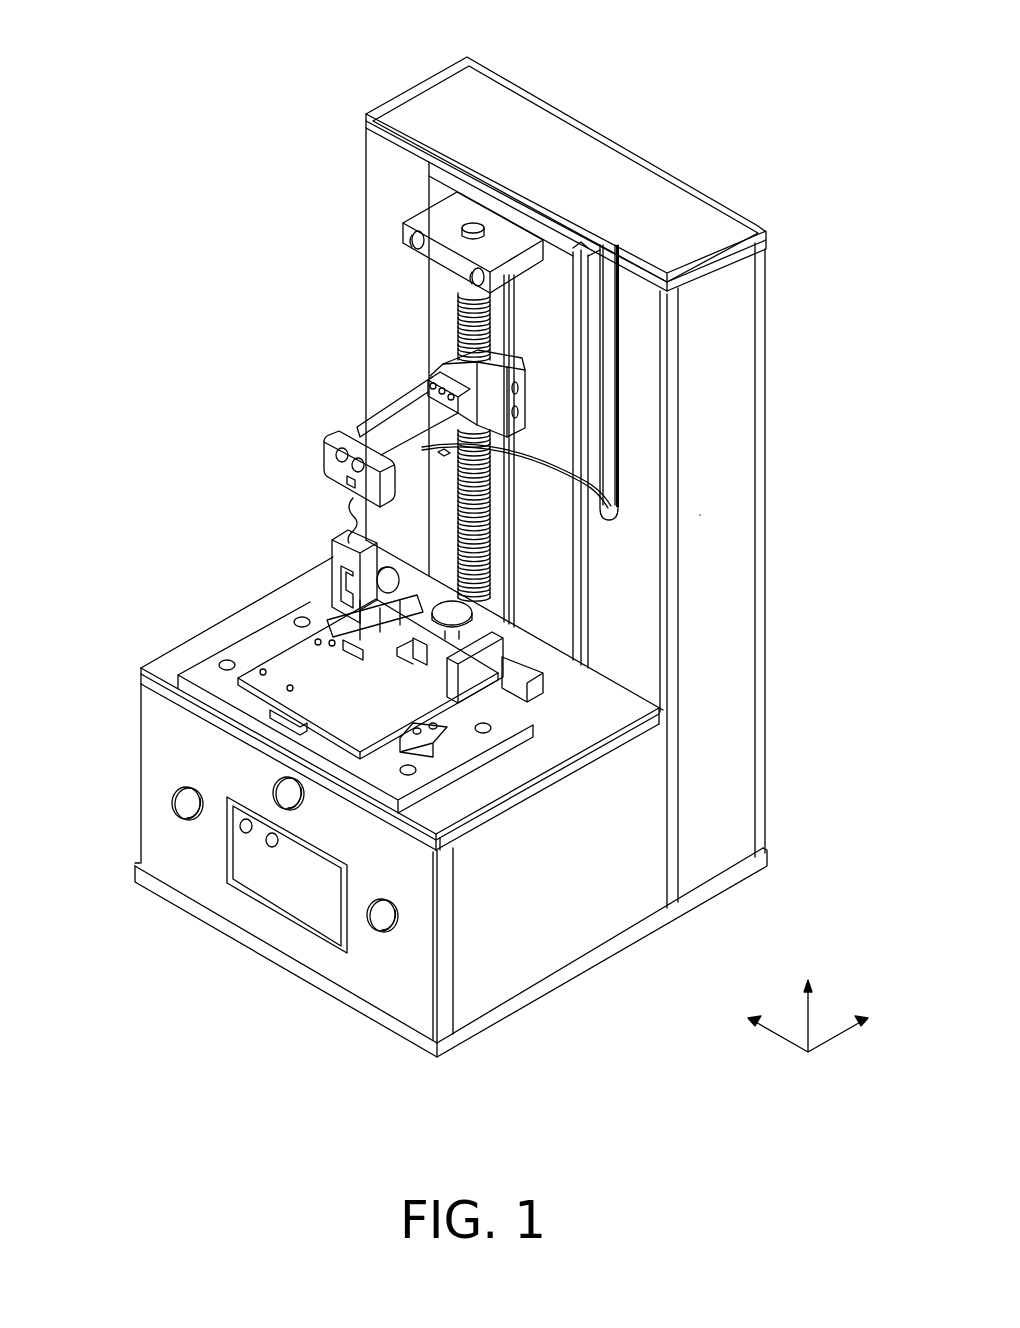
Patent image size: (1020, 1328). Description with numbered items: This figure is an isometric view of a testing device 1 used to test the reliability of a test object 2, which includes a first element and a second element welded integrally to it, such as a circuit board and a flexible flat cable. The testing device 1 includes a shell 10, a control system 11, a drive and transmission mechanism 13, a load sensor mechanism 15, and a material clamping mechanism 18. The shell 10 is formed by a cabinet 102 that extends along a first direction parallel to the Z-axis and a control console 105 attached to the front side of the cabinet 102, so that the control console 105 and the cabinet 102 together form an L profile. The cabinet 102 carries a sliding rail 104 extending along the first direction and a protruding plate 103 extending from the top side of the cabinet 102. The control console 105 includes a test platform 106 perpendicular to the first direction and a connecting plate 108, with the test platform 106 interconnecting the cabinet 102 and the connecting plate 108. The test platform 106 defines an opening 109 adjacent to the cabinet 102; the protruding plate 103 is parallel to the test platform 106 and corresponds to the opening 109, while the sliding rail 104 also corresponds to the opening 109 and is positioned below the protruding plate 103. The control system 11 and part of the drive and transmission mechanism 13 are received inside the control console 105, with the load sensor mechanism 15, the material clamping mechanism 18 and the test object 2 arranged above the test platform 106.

The testing device 1 is at (621, 76).
The shell 10 is at (848, 528).
The cabinet 102 is at (700, 519).
The protruding plate 103 is at (508, 241).
The sliding rail 104 is at (497, 320).
The control console 105 is at (640, 787).
The test platform 106 is at (180, 652).
The connecting plate 108 is at (165, 837).
The opening 109 is at (537, 688).
The control system 11 is at (290, 892).
The drive and transmission mechanism 13 is at (457, 363).
The load sensor mechanism 15 is at (342, 455).
The material clamping mechanism 18 is at (290, 663).
The test object 2 is at (337, 620).